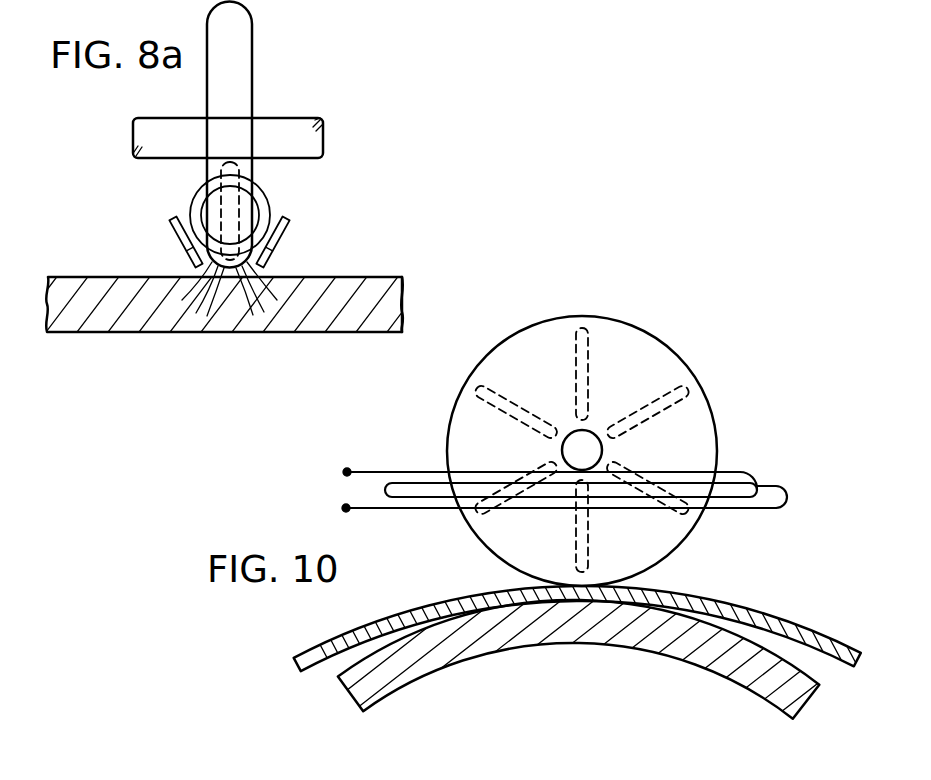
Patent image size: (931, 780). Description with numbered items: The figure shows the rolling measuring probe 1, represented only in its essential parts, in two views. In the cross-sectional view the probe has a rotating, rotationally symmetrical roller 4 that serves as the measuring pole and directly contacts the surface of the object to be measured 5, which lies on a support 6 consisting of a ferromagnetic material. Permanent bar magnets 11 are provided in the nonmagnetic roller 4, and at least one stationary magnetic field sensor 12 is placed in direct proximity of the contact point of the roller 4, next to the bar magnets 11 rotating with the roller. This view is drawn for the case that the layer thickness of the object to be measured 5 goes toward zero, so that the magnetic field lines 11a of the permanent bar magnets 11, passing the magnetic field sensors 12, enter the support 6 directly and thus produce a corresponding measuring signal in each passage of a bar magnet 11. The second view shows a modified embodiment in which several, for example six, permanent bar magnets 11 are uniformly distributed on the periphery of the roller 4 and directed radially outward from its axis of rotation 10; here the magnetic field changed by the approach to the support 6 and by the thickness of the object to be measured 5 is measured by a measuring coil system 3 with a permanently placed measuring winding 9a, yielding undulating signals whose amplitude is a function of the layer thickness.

In FIG. 8a, the measuring probe 1 is at (274, 135).
In FIG. 10, the measuring probe 1 is at (582, 428).
In FIG. 10, the measuring coil system 3 is at (381, 470).
In FIG. 8a, the roller 4 is at (257, 8).
In FIG. 10, the roller 4 is at (672, 350).
In FIG. 8a, the object to be measured 5 is at (345, 280).
In FIG. 10, the object to be measured 5 is at (765, 614).
In FIG. 8a, the support 6 is at (395, 297).
In FIG. 10, the support 6 is at (800, 700).
In FIG. 10, the measuring winding 9a is at (790, 495).
In FIG. 8a, the axis of rotation 10 is at (312, 118).
In FIG. 10, the axis of rotation 10 is at (594, 432).
In FIG. 8a, the permanent bar magnets 11 is at (232, 201).
In FIG. 10, the permanent bar magnets 11 is at (578, 343).
In FIG. 8a, the magnetic field lines 11a is at (186, 296).
In FIG. 8a, the magnetic field sensor 12 is at (177, 248).